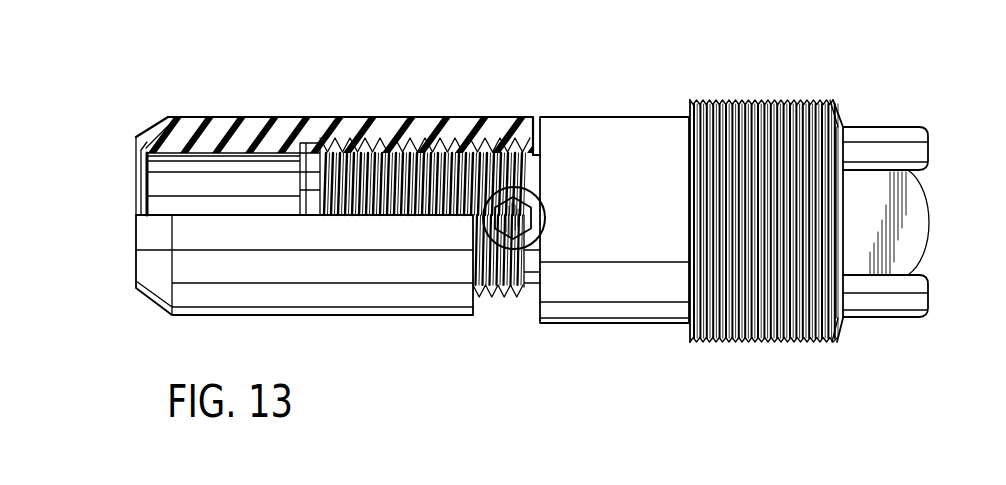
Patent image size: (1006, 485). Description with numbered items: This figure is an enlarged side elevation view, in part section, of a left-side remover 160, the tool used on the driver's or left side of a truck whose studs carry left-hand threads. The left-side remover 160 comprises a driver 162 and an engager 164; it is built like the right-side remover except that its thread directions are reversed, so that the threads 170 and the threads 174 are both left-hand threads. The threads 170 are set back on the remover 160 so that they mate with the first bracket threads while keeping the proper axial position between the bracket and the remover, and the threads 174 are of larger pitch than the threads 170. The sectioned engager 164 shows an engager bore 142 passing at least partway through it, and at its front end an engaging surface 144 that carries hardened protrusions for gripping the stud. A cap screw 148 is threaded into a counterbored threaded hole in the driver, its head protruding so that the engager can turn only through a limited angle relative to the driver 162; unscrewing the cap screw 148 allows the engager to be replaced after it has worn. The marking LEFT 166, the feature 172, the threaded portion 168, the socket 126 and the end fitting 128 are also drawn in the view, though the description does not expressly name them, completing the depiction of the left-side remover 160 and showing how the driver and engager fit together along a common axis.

The hex socket 126 is at (523, 223).
The coupling end fitting 128 is at (928, 150).
The engager bore 142 is at (165, 187).
The engaging surface 144 is at (136, 140).
The cap screw 148 is at (533, 203).
The left-side remover 160 is at (742, 96).
The driver 162 is at (845, 126).
The engager 164 is at (263, 290).
The flat marked LEFT 166 is at (628, 133).
The external thread 168 is at (417, 148).
The threads 170 is at (823, 341).
The nut wall section 172 is at (354, 119).
The threads 174 is at (477, 148).